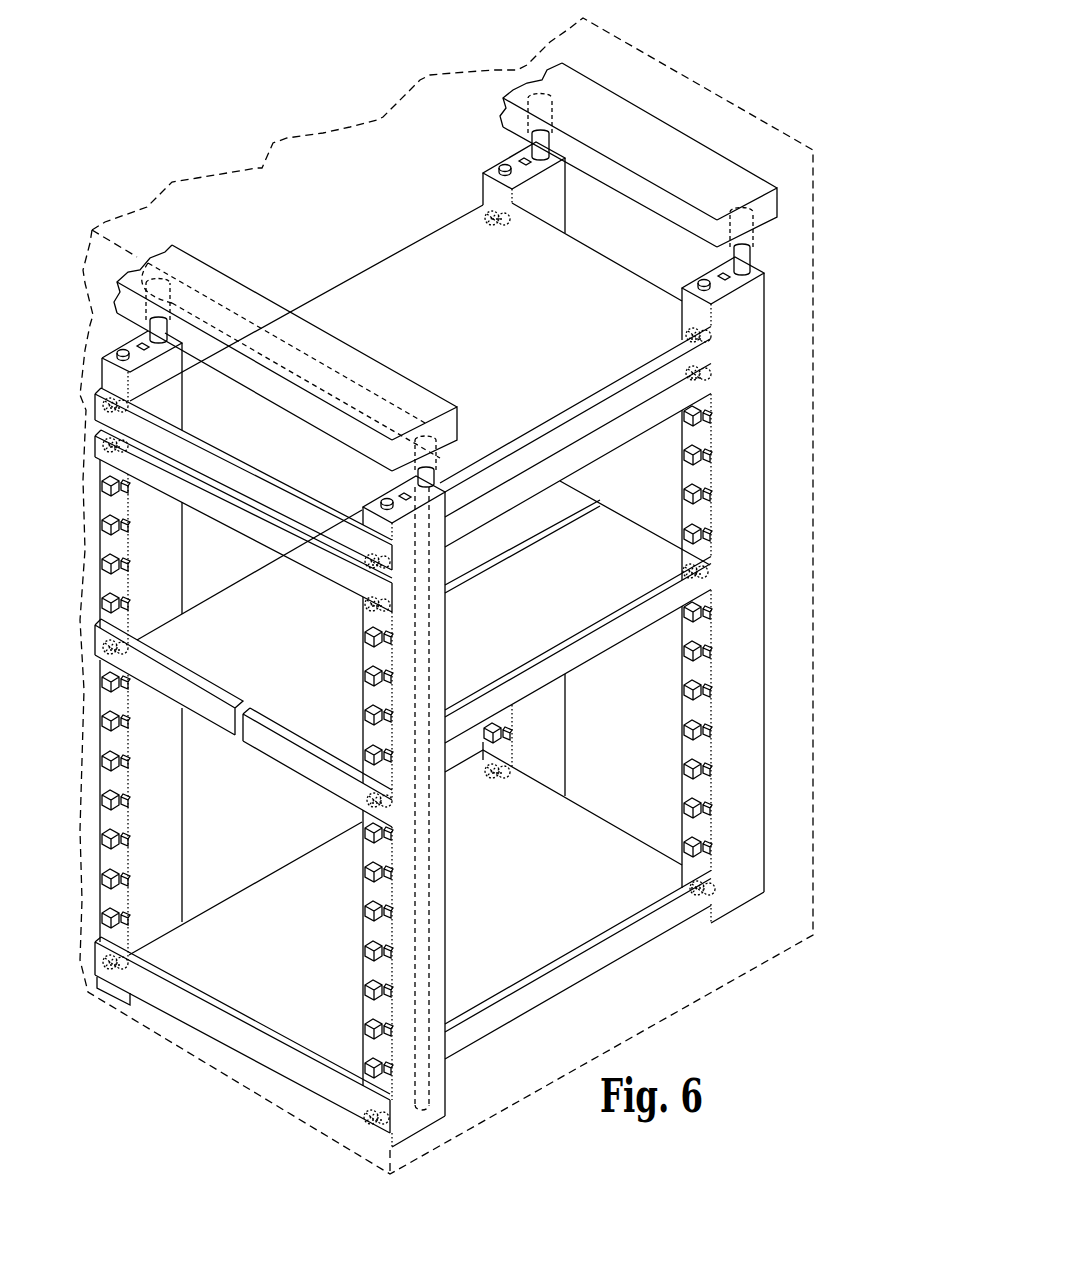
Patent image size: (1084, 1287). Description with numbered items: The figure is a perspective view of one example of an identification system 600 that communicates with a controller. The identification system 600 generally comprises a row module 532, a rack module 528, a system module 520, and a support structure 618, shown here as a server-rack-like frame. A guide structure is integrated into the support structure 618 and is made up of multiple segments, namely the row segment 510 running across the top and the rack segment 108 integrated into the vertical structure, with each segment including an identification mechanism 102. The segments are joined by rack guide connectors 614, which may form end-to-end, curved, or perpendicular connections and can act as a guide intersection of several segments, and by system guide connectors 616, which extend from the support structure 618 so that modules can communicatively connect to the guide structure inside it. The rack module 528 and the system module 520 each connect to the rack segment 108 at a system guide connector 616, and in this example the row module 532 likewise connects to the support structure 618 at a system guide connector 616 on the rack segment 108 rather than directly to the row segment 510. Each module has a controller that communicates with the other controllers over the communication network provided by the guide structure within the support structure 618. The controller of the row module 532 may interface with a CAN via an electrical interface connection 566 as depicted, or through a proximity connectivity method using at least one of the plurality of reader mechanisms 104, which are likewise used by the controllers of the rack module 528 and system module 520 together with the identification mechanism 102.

The identification system 600 is at (720, 84).
The rack guide connector 614 is at (558, 114).
The rack module 528 is at (370, 258).
The identification mechanism 102 is at (492, 226).
The reader mechanism 104 is at (502, 232).
The row segment 510 is at (376, 382).
The system module 520 is at (600, 458).
The system guide connector 616 is at (684, 493).
The support structure 618 is at (567, 720).
The rack segment 108 is at (446, 872).
The row module 532 is at (580, 984).
The electrical interface connection 566 is at (101, 986).